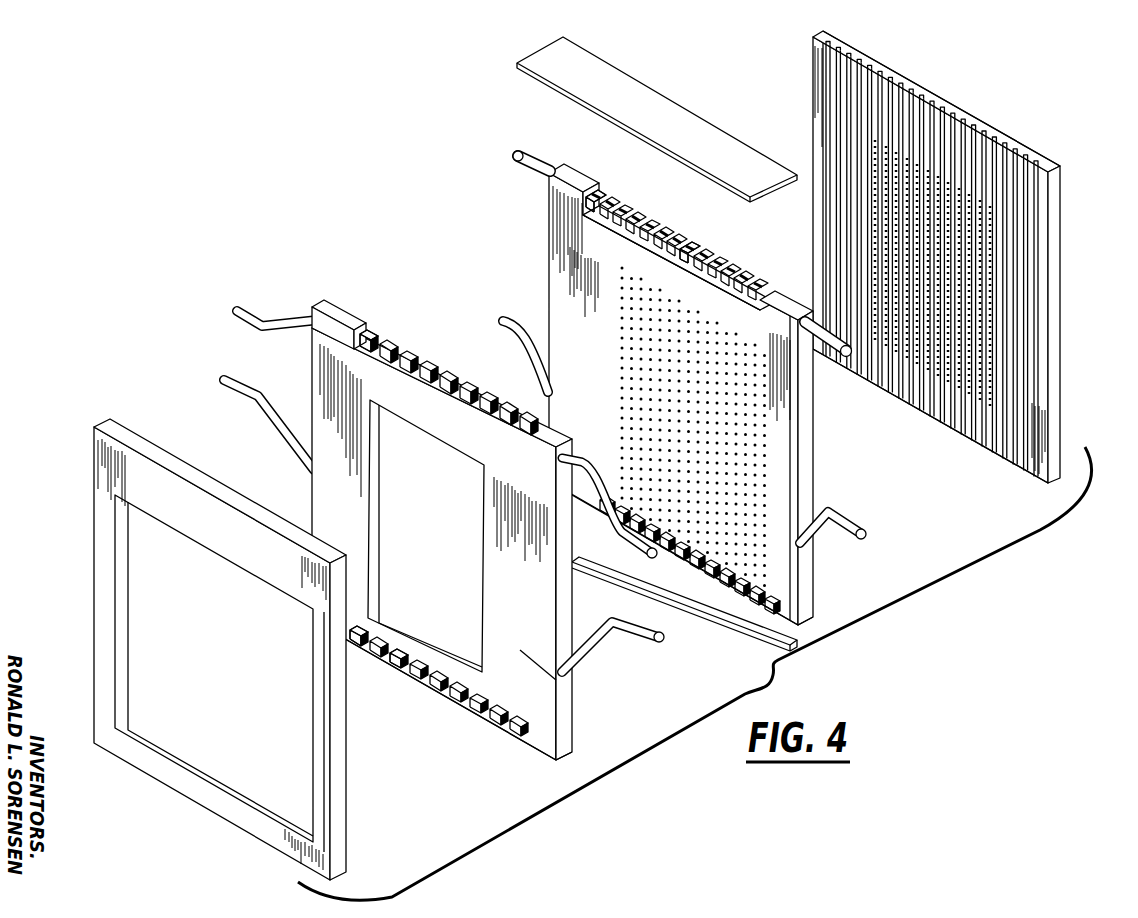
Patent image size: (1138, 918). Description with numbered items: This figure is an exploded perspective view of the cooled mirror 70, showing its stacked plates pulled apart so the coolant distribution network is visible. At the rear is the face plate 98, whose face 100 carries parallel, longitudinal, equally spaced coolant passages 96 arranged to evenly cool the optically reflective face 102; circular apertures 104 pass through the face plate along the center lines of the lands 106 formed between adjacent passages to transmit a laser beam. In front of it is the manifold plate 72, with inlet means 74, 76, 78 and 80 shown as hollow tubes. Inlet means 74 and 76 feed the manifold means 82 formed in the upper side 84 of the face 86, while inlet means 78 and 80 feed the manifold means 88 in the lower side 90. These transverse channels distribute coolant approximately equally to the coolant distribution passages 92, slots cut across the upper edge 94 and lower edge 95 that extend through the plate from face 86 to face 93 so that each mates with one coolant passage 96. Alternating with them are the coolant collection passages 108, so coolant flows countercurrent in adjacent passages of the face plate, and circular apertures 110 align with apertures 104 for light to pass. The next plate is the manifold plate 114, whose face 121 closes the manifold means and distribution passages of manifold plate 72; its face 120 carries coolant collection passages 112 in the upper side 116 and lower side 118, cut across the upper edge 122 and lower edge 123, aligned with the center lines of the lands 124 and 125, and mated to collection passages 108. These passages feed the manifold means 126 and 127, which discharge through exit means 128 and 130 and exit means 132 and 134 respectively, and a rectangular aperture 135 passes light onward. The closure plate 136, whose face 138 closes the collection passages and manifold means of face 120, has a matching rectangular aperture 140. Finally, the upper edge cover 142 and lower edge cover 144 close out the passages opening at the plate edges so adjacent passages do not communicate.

The mirror 70 is at (305, 157).
The manifold plate 72 is at (478, 209).
The inlet means 74 is at (520, 163).
The inlet means 76 is at (828, 355).
The inlet means 78 is at (548, 290).
The inlet means 80 is at (855, 520).
The manifold means 82 is at (583, 218).
The upper side 84 is at (712, 255).
The face 86 is at (782, 468).
The manifold means 88 is at (745, 600).
The lower side 90 is at (805, 575).
The coolant distribution passages 92 is at (655, 212).
The face 93 is at (812, 452).
The upper edge 94 is at (577, 176).
The lower edge 95 is at (800, 612).
The coolant passages 96 is at (1000, 145).
The face plate 98 is at (776, 75).
The face 100 is at (1040, 345).
The optically reflective face 102 is at (1050, 390).
The apertures 104 is at (1000, 235).
The lands 106 is at (970, 135).
The coolant collection passages 108 is at (608, 195).
The apertures 110 is at (730, 380).
The coolant collection passages 112 is at (430, 335).
The manifold plate 114 is at (210, 360).
The upper side 116 is at (447, 423).
The lower side 118 is at (470, 695).
The face 120 is at (530, 725).
The face 121 is at (575, 715).
The upper edge 122 is at (305, 300).
The lower edge 123 is at (572, 752).
The lands 124 is at (370, 640).
The lands 125 is at (398, 330).
The manifold means 126 is at (345, 362).
The manifold means 127 is at (400, 675).
The exit means 128 is at (245, 305).
The exit means 130 is at (614, 545).
The exit means 132 is at (245, 400).
The exit means 134 is at (590, 640).
The aperture 135 is at (385, 563).
The closure plate 136 is at (68, 453).
The face 138 is at (350, 790).
The aperture 140 is at (110, 545).
The upper edge cover 142 is at (552, 70).
The lower edge cover 144 is at (660, 620).